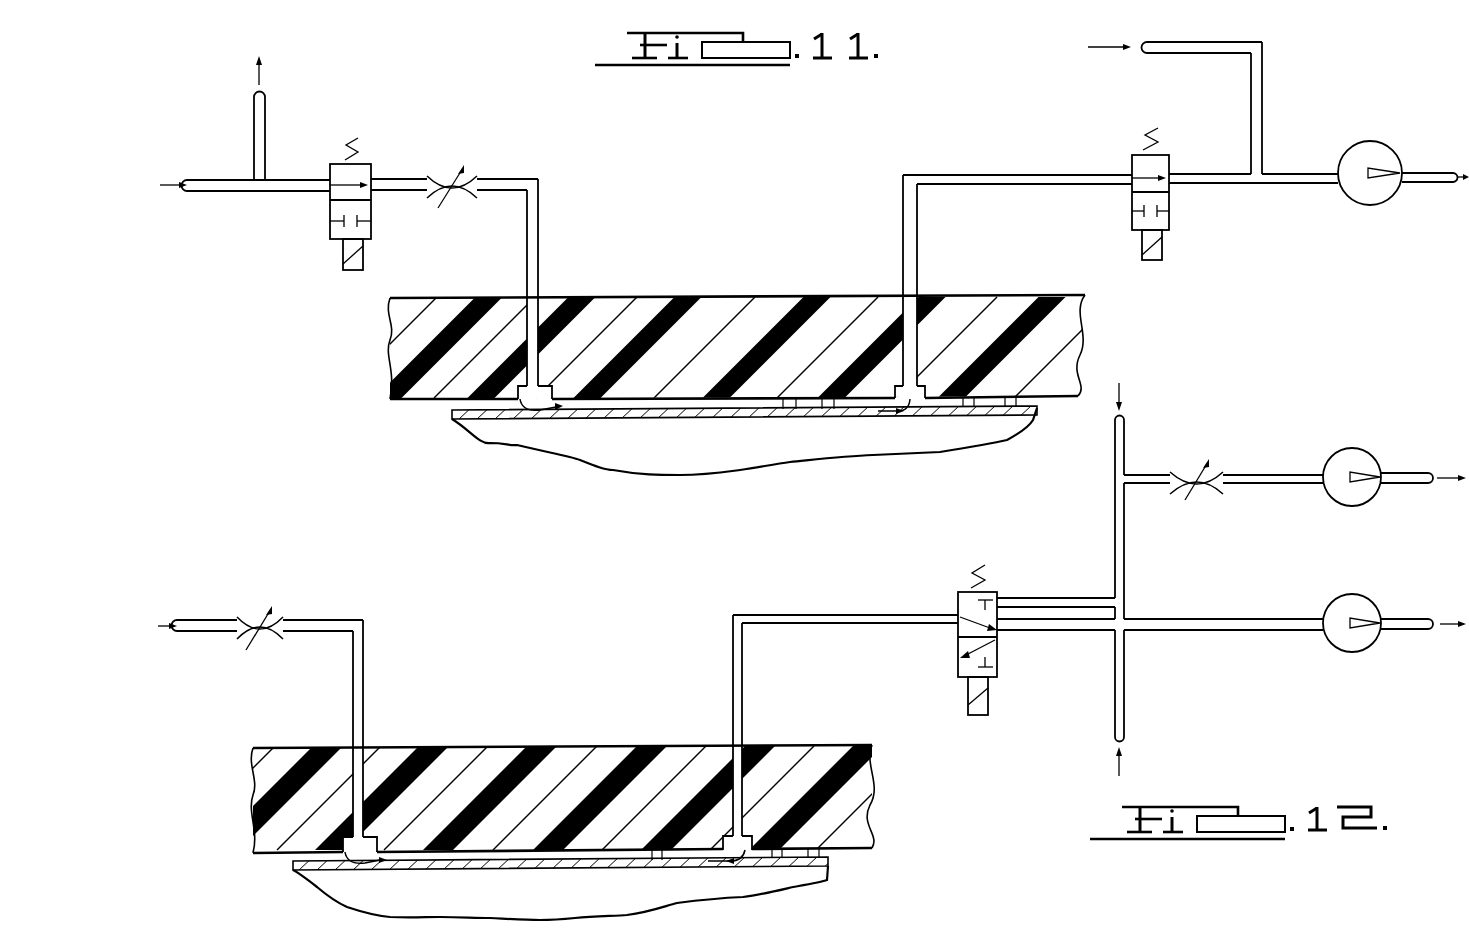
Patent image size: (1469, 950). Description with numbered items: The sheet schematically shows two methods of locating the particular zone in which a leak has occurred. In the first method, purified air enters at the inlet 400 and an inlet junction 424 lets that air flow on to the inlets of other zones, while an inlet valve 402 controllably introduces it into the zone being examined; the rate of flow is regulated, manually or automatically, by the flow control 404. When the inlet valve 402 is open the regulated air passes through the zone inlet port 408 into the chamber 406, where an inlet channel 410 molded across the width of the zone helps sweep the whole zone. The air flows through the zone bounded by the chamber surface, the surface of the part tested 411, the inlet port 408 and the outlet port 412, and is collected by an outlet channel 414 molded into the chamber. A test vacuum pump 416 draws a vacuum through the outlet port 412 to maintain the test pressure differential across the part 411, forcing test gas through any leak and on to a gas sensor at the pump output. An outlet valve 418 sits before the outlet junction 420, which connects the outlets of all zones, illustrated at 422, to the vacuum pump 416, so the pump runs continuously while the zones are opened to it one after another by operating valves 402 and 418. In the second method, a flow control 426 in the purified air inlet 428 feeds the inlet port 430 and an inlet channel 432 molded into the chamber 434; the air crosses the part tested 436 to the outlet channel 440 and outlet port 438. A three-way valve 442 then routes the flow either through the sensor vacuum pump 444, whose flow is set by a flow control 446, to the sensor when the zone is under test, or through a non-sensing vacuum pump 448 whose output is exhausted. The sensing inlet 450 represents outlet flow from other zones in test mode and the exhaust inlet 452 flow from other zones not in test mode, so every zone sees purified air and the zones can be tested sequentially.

In FIG. 11, the inlet 400 is at (200, 180).
In FIG. 11, the inlet valve 402 is at (367, 160).
In FIG. 11, the flow control 404 is at (463, 190).
In FIG. 11, the chamber 406 is at (412, 351).
In FIG. 11, the zone inlet port 408 is at (527, 388).
In FIG. 11, the inlet channel 410 is at (537, 388).
In FIG. 11, the part tested 411 is at (678, 457).
In FIG. 11, the outlet port 412 is at (910, 370).
In FIG. 11, the outlet channel 414 is at (915, 392).
In FIG. 11, the test vacuum pump 416 is at (1370, 150).
In FIG. 11, the outlet valve 418 is at (1170, 182).
In FIG. 11, the outlet junction 420 is at (1260, 177).
In FIG. 11, the outlets of other zones 422 is at (1172, 52).
In FIG. 11, the inlet junction 424 is at (260, 190).
In FIG. 12, the flow control 426 is at (272, 617).
In FIG. 12, the purified air inlet 428 is at (200, 622).
In FIG. 12, the inlet port 430 is at (358, 835).
In FIG. 12, the inlet channel 432 is at (347, 840).
In FIG. 12, the chamber 434 is at (282, 775).
In FIG. 12, the part tested 436 is at (573, 863).
In FIG. 12, the outlet port 438 is at (740, 822).
In FIG. 12, the outlet channel 440 is at (747, 840).
In FIG. 12, the 3-way valve 442 is at (997, 593).
In FIG. 12, the sensor vacuum pump 444 is at (1355, 458).
In FIG. 12, the flow control 446 is at (1212, 490).
In FIG. 12, the non-sensing vacuum pump 448 is at (1355, 598).
In FIG. 12, the sensing inlet 450 is at (1125, 422).
In FIG. 12, the exhaust inlet 452 is at (1122, 737).